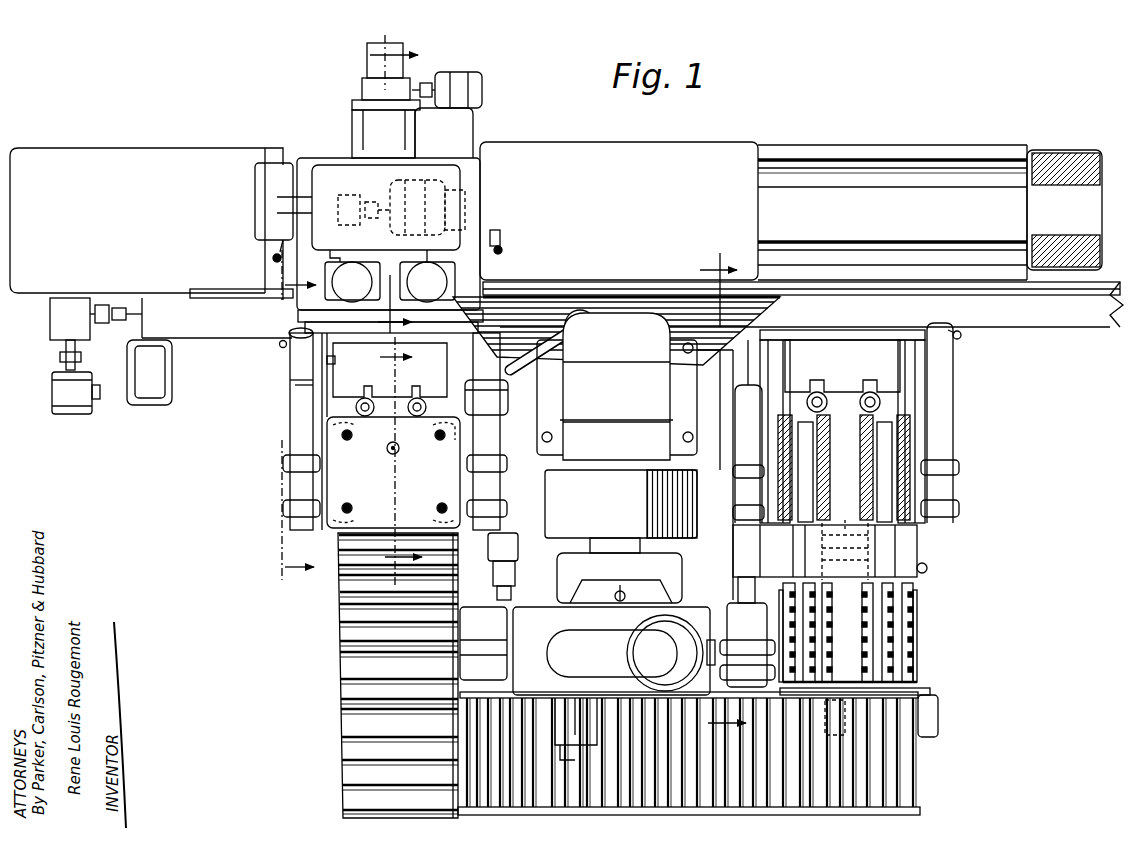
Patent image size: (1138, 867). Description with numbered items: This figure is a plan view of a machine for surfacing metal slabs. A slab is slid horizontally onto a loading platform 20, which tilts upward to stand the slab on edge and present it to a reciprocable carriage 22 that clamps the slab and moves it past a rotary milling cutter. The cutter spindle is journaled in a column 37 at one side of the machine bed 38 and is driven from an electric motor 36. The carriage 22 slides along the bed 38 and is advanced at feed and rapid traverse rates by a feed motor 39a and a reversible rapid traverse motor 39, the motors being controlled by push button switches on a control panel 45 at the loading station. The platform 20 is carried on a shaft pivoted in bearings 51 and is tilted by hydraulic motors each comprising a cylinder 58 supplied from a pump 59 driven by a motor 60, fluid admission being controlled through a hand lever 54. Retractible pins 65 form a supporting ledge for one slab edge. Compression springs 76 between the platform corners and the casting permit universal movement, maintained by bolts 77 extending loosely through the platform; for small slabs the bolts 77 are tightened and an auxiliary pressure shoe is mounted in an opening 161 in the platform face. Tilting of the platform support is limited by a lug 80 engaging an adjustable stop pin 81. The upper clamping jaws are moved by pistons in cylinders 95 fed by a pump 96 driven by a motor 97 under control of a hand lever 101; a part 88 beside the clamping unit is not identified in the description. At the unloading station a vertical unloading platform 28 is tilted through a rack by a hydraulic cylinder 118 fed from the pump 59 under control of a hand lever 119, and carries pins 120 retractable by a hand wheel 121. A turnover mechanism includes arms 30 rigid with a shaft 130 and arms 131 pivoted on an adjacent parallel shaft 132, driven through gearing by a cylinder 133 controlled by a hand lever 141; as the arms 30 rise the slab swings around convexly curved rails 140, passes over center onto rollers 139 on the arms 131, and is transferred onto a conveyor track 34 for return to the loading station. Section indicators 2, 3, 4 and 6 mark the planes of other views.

The section line 2- 2 is at (402, 191).
The section line 3- 3 is at (304, 415).
The section line 4- 4 is at (407, 461).
The section line 6- 6 is at (730, 497).
The platform 20 is at (337, 534).
The reciprocable carriage 22 is at (518, 160).
The unloading platform 28 is at (780, 428).
The arms 30 is at (885, 452).
The track 34 is at (358, 658).
The electric motor 36 is at (577, 395).
The column 37 is at (639, 476).
The machine bed 38 is at (958, 190).
The reversible rapid traverse motor 39 is at (688, 672).
The feed motor 39a is at (497, 615).
The control panel 45 is at (150, 395).
The bearings 51 is at (333, 383).
The hand lever 54 is at (280, 346).
The cylinder 58 is at (292, 494).
The pump 59 is at (835, 733).
The motor 60 is at (936, 720).
The retractible pins 65 is at (412, 400).
The compression springs 76 is at (400, 475).
The bolts 77 is at (350, 440).
The lug 80 is at (295, 385).
The adjustable stop pin 81 is at (335, 362).
The cylinder 88 is at (482, 92).
The cylinders 95 is at (427, 275).
The pump 96 is at (355, 195).
The motor 97 is at (410, 185).
The hand lever 101 is at (274, 254).
The hydraulic cylinder 118 is at (735, 490).
The hand lever 119 is at (974, 344).
The pins 120 is at (866, 393).
The hand wheel 121 is at (902, 395).
The shaft 130 is at (852, 513).
The arms 131 is at (815, 641).
The shaft 132 is at (855, 637).
The cylinder 133 is at (735, 628).
The rollers 139 is at (735, 675).
The convexly curved rails 140 is at (905, 552).
The hand lever 141 is at (927, 568).
The opening 161 is at (393, 454).